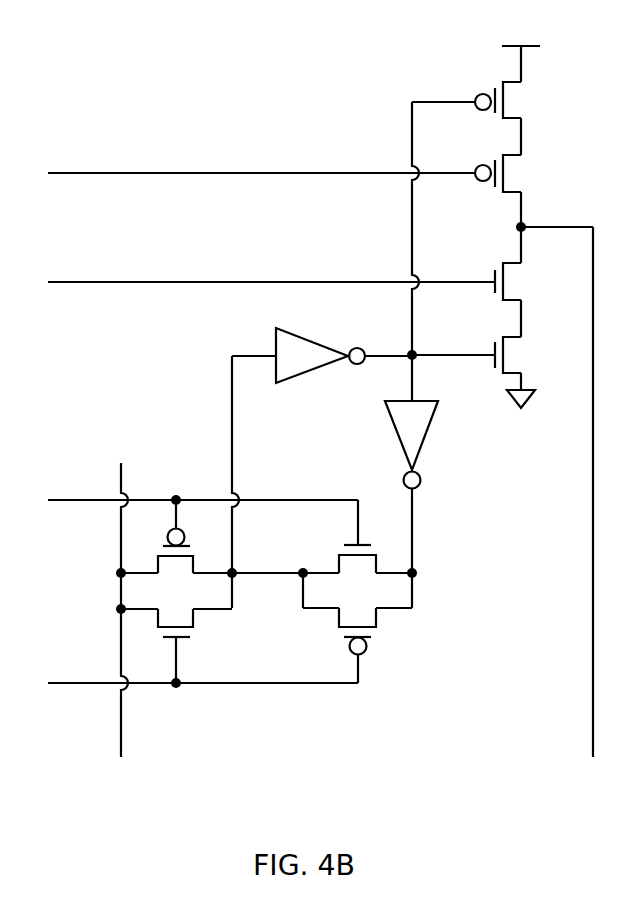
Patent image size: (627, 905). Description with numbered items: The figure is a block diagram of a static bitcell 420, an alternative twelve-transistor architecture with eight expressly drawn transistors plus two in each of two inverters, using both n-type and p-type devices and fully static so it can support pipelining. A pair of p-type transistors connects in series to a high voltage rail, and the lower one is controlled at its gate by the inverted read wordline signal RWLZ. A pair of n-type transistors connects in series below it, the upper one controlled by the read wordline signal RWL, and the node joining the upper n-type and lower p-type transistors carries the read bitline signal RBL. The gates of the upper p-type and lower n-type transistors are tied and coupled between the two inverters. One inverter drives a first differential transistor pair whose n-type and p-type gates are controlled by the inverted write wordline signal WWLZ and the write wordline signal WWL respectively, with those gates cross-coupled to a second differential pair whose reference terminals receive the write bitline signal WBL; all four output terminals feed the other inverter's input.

The bitcell 420 is at (138, 36).
The inverted read wordline signal RWLZ is at (261, 159).
The read wordline signal RWL is at (271, 268).
The read bitline signal RBL is at (557, 492).
The write bitline signal WBL is at (98, 610).
The inverted write wordline signal WWLZ is at (203, 508).
The write wordline signal WWL is at (203, 697).